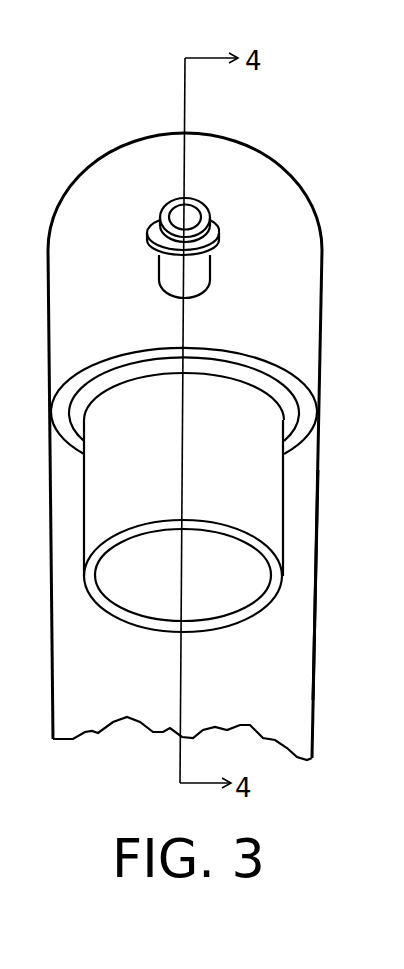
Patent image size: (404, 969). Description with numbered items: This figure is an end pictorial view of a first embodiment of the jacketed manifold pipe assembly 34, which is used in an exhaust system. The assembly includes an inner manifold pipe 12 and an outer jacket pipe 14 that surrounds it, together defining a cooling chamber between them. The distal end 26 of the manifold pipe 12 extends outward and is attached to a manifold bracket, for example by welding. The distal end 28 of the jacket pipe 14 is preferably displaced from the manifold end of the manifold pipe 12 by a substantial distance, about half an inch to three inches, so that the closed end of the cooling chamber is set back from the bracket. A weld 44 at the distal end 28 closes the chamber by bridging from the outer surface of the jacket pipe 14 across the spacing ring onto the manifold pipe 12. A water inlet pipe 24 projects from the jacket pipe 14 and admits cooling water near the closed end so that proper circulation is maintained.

The manifold pipe 12 is at (256, 498).
The jacket pipe 14 is at (258, 213).
The inlet pipe 24 is at (197, 278).
The distal end of manifold pipe 26 is at (245, 612).
The distal end of jacket pipe 28 is at (303, 423).
The jacketed manifold pipe assembly 34 is at (314, 567).
The weld 44 is at (270, 390).